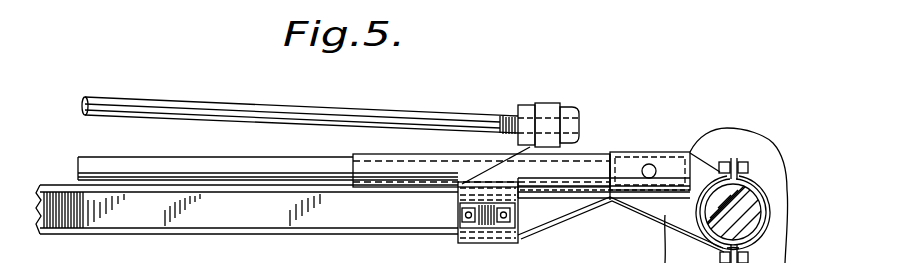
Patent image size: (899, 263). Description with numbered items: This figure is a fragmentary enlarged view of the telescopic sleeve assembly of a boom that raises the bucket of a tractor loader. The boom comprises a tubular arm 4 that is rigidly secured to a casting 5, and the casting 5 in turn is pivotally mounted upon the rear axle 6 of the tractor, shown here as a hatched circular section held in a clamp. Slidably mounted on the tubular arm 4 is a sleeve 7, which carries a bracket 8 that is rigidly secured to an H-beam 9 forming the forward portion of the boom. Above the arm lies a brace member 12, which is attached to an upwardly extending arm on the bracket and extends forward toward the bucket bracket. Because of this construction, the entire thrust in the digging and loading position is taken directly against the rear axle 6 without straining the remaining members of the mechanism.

The tubular arm 4 is at (209, 163).
The casting 5 is at (662, 165).
The rear axle 6 is at (752, 178).
The sleeve 7 is at (585, 163).
The bracket 8 is at (530, 218).
The H-beam 9 is at (196, 222).
The brace member 12 is at (405, 114).